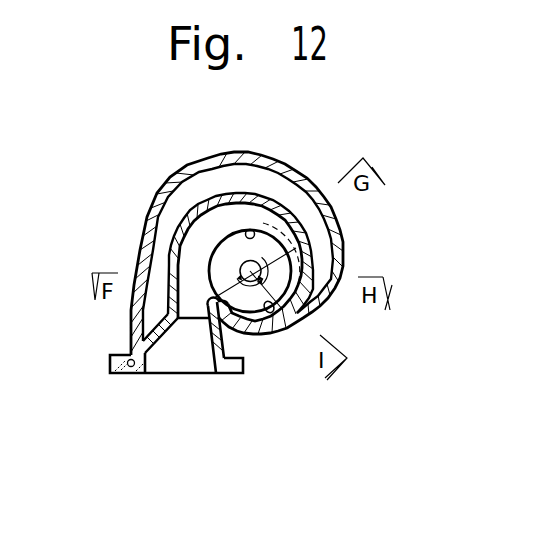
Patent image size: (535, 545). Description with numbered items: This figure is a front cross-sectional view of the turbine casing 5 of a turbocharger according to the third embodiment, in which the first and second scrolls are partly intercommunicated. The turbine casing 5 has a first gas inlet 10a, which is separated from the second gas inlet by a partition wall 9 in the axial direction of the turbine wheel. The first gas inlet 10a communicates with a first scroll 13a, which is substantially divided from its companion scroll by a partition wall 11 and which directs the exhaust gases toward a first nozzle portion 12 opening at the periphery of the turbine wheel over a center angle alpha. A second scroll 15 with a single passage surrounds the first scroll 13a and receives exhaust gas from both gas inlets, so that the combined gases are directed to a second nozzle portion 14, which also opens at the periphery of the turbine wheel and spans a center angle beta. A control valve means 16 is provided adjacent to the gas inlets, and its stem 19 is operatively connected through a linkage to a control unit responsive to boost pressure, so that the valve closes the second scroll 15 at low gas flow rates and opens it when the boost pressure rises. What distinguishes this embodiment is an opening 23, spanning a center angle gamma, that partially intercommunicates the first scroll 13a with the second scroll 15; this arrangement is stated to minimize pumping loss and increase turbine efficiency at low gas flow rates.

The turbine casing 5 is at (313, 174).
The partition wall 9 is at (162, 366).
The first gas inlet 10a is at (185, 352).
The partition wall 11 is at (180, 247).
The first nozzle portion 12 is at (250, 231).
The first scroll 13a is at (202, 212).
The second nozzle portion 14 is at (268, 306).
The second scroll 15 is at (202, 192).
The control valve means 16 is at (157, 332).
The stem 19 is at (120, 362).
The opening 23 is at (288, 261).